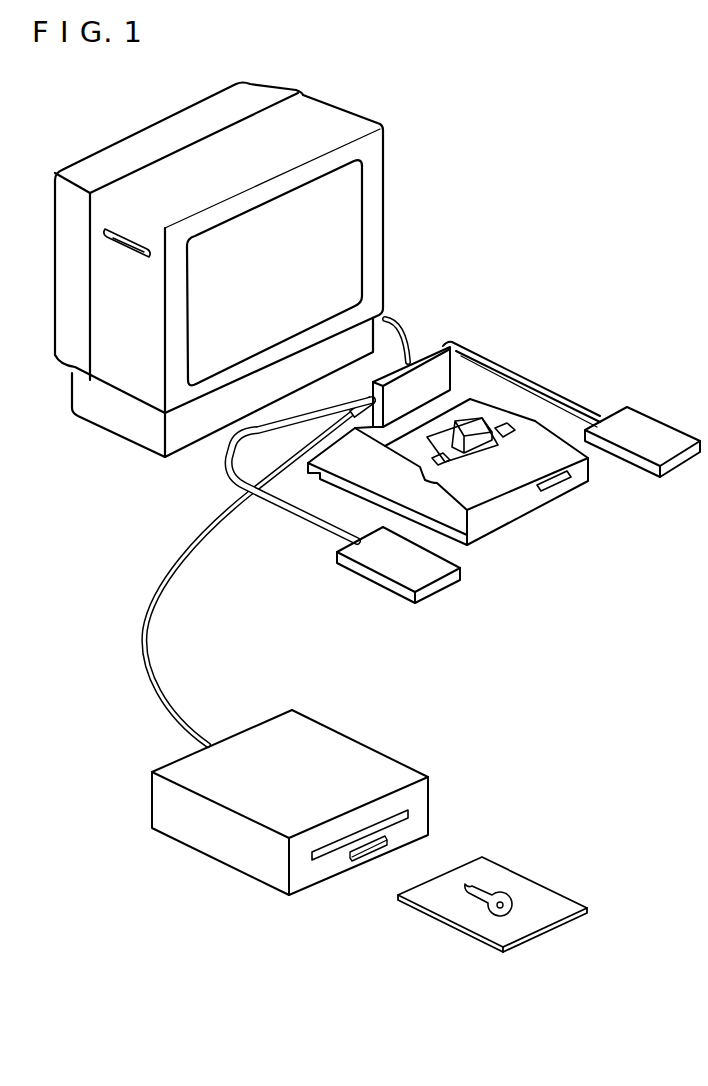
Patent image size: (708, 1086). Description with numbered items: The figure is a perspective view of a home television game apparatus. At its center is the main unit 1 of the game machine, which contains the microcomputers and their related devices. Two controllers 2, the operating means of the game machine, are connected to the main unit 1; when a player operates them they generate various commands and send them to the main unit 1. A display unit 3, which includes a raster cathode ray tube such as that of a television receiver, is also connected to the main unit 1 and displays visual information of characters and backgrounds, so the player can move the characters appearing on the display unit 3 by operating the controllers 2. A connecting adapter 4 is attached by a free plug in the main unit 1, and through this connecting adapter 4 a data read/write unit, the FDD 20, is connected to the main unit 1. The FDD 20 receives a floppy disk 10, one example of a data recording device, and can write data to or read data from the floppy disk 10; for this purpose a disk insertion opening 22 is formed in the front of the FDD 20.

The main unit 1 is at (510, 511).
The controllers 2 is at (437, 587).
The display unit 3 is at (385, 213).
The connecting adapter 4 is at (425, 357).
The floppy disk 10 is at (528, 885).
The FDD 20 is at (353, 735).
The disk insertion opening 22 is at (407, 812).